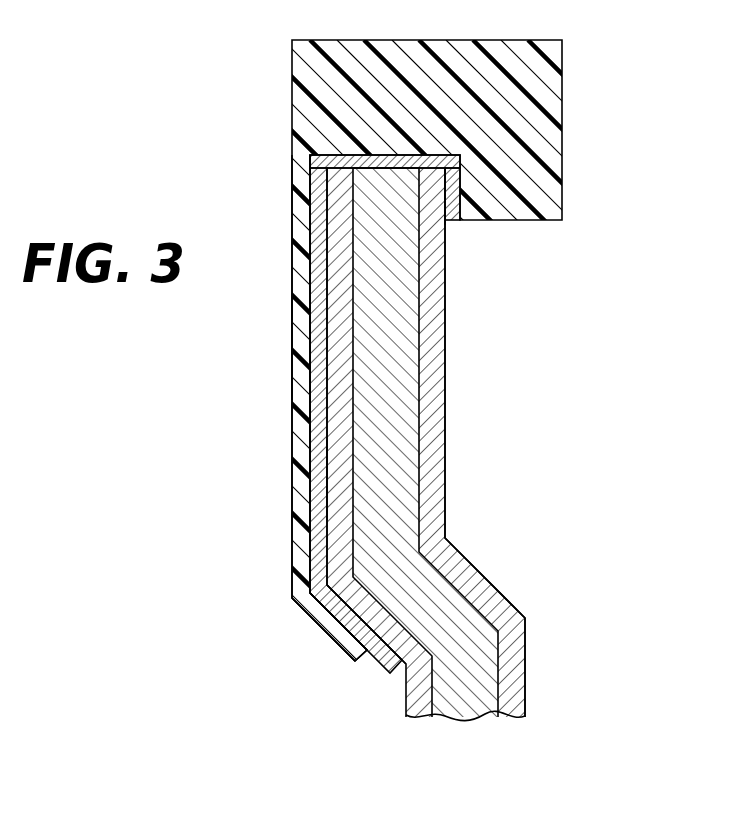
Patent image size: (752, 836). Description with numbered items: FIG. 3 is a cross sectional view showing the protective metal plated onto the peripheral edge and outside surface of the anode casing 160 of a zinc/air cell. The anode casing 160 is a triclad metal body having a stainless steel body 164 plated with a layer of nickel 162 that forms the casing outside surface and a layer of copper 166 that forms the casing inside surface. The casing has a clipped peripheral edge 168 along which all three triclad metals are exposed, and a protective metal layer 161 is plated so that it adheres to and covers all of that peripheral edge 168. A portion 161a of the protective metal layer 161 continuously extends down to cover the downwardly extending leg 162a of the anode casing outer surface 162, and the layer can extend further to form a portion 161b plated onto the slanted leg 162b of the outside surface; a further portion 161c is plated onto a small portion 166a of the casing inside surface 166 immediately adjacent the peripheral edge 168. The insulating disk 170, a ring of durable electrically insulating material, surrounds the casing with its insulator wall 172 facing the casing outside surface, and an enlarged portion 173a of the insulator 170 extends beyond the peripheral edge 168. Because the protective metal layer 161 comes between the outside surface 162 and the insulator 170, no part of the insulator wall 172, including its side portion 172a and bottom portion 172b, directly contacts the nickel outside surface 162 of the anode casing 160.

The anode casing 160 is at (445, 303).
The protective metal layer 161 is at (387, 170).
The portion of protective metal layer 161a is at (310, 380).
The portion of protective metal layer 161b is at (332, 635).
The portion of protective metal layer 161c is at (462, 182).
The nickel layer 162 is at (327, 452).
The downwardly extending leg 162a is at (323, 485).
The slanted leg 162b is at (388, 663).
The stainless steel body 164 is at (400, 402).
The copper layer 166 is at (440, 342).
The small portion of casing inside surface 166a is at (452, 188).
The peripheral edge 168 is at (446, 169).
The insulating disk 170 is at (302, 173).
The insulator wall 172 is at (292, 222).
The inner liner side portion 172a is at (293, 332).
The inner liner bottom portion 172b is at (313, 630).
The enlarged portion 173a is at (527, 75).